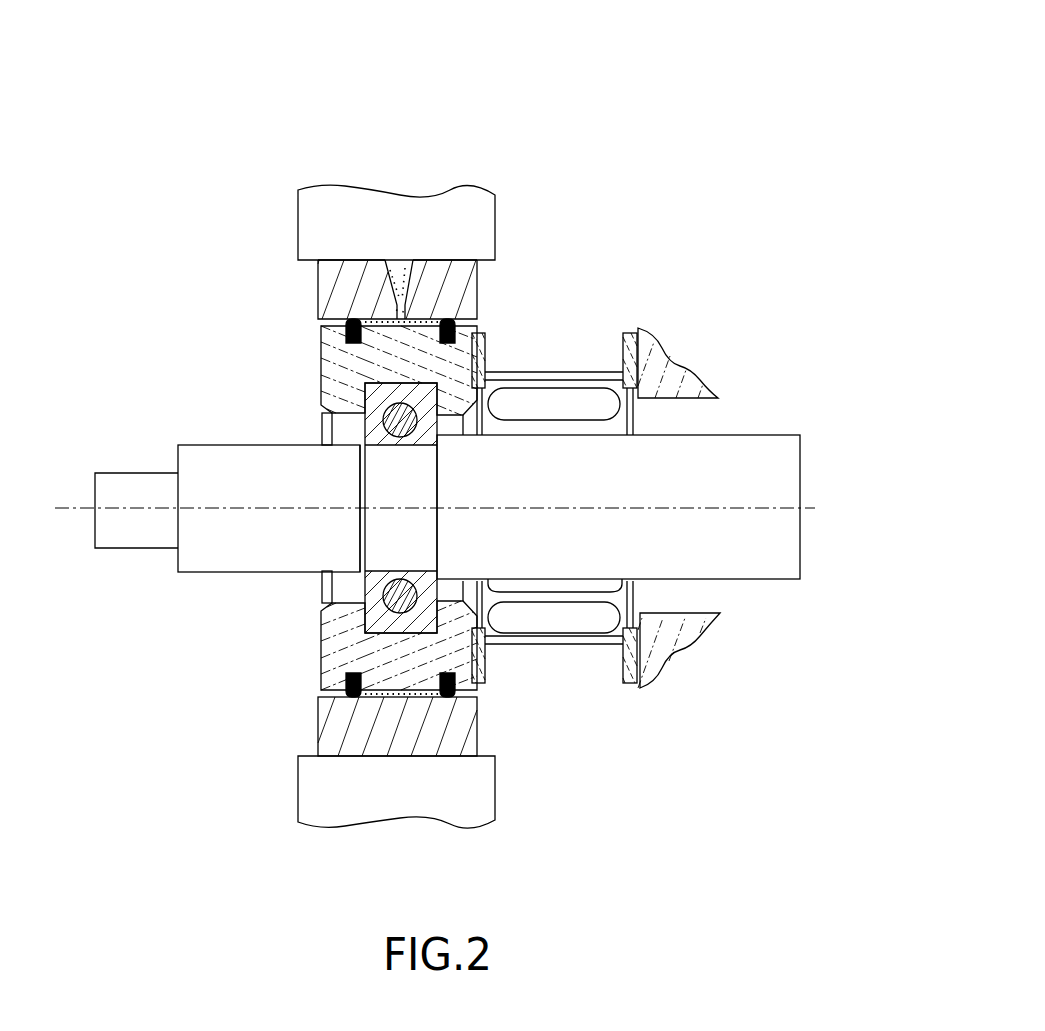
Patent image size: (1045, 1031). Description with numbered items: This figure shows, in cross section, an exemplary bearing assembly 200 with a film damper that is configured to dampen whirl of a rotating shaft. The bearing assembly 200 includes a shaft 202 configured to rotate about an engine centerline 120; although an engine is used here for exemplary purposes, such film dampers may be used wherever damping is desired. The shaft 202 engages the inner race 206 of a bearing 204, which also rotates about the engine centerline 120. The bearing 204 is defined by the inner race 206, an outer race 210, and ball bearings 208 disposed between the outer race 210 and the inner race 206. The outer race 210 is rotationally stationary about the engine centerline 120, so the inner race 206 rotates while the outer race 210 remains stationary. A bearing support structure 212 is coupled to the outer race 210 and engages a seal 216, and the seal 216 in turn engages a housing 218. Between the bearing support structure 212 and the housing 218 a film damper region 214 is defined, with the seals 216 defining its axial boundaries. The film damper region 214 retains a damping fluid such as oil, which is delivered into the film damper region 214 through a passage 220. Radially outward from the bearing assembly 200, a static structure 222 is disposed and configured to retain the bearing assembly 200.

The engine centerline 120 is at (60, 512).
The bearing assembly 200 is at (665, 90).
The shaft 202 is at (760, 450).
The bearing 204 is at (358, 437).
The inner race 206 is at (364, 441).
The ball bearings 208 is at (384, 420).
The outer race 210 is at (383, 396).
The bearing support structure 212 is at (462, 362).
The film damper region 214 is at (433, 323).
The seal 216 is at (405, 322).
The housing 218 is at (455, 268).
The passage 220 is at (381, 279).
The static structure 222 is at (352, 203).